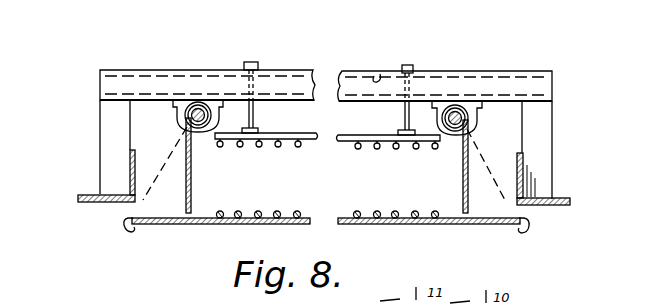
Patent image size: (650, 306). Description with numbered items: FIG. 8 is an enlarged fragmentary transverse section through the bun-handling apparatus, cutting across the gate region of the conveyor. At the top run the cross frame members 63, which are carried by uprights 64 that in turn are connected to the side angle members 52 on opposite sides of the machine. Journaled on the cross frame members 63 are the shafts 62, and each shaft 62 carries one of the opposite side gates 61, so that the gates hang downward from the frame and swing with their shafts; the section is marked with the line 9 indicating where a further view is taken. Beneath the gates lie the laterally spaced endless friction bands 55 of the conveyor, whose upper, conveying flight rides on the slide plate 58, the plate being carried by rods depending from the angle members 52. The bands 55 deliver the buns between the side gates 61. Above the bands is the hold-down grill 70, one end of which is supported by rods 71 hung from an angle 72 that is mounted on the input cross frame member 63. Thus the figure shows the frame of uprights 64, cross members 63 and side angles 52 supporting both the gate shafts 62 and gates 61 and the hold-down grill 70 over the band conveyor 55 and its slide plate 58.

The section line 9- 9 is at (133, 42).
The angle member 52 is at (80, 194).
The friction band 55 is at (396, 212).
The slide plate 58 is at (380, 225).
The side gate 61 is at (158, 179).
The shaft 62 is at (198, 103).
The cross frame member 63 is at (355, 71).
The upright 64 is at (107, 120).
The hold-down grill 70 is at (338, 137).
The rod 71 is at (254, 119).
The angle 72 is at (380, 66).